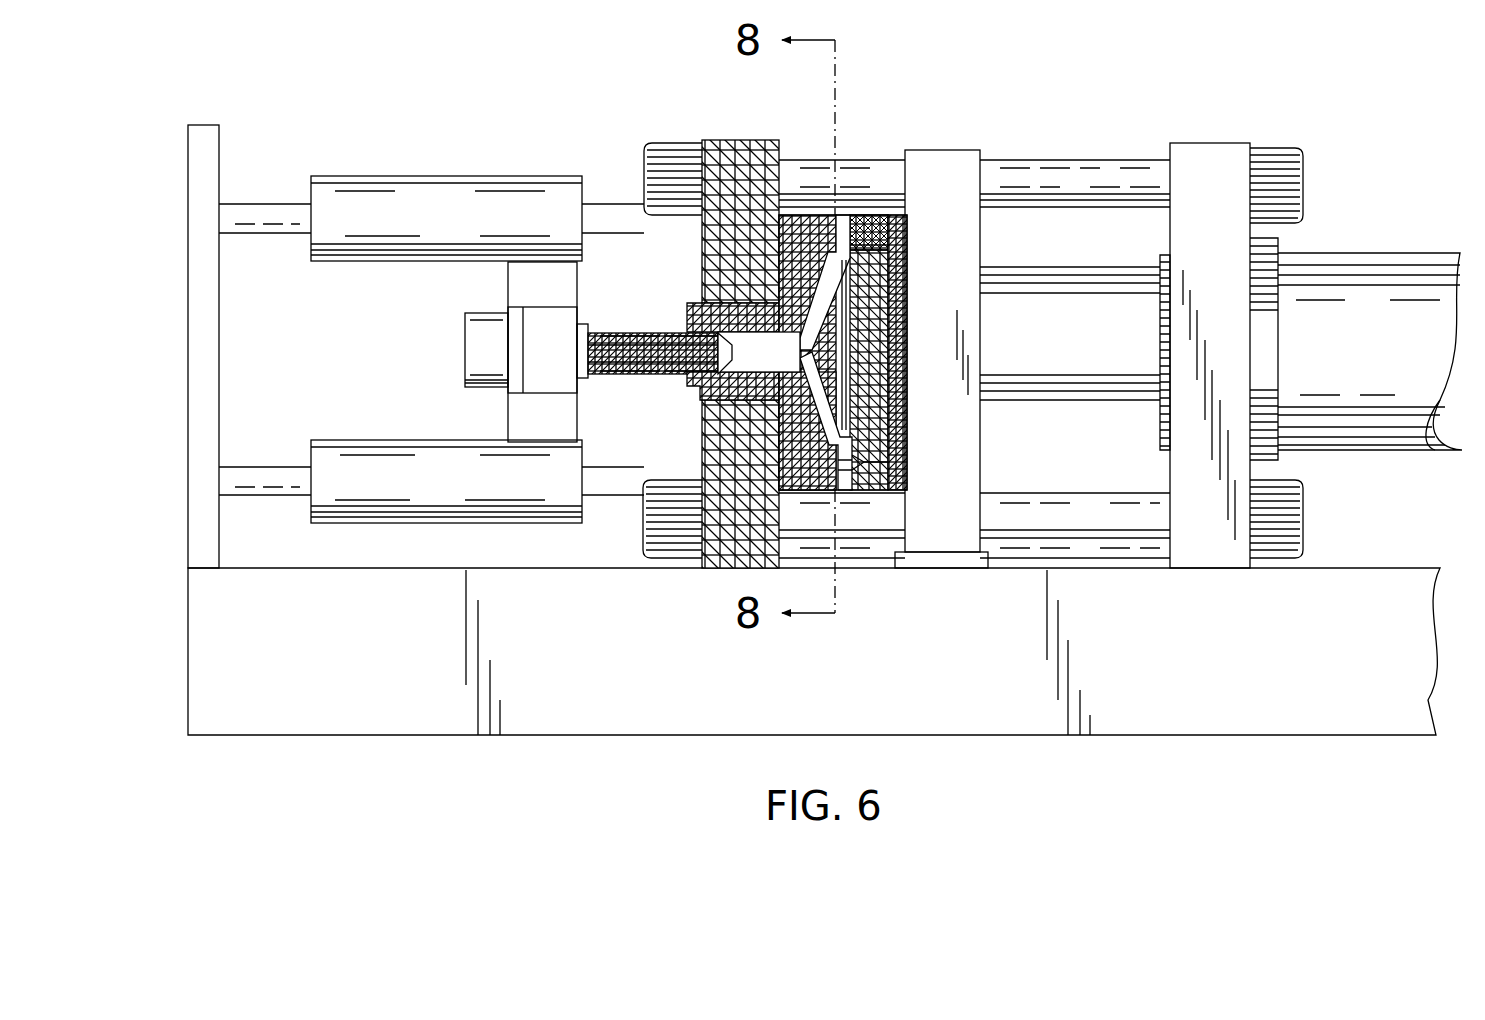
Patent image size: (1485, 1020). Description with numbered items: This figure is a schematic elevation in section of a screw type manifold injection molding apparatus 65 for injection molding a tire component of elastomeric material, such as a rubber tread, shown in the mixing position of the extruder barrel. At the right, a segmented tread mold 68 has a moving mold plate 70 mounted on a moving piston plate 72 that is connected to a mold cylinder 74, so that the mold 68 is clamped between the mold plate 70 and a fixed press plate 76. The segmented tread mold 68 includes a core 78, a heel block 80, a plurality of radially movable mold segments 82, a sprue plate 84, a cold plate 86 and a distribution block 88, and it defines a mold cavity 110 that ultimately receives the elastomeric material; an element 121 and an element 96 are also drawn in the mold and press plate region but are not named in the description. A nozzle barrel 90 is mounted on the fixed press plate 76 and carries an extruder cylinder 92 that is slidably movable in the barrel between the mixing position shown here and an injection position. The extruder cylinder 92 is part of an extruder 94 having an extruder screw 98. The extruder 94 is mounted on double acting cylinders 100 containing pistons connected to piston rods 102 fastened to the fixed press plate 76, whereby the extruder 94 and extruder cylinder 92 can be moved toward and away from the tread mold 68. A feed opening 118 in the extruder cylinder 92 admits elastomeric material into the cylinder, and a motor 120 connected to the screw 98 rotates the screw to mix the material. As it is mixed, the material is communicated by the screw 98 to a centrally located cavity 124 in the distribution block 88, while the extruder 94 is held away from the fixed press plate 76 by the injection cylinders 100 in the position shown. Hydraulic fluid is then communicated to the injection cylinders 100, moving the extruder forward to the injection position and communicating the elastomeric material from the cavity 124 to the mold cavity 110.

The manifold injection molding apparatus 65 is at (285, 160).
The double acting cylinders 100 is at (440, 195).
The piston rods 102 is at (606, 215).
The fixed press plate 76 is at (737, 140).
The cold plate 86 is at (800, 215).
The heel block 80 is at (866, 215).
The segmented tread mold 68 is at (870, 215).
The moving mold plate 70 is at (898, 215).
The mold cavity 110 is at (890, 248).
The core 78 is at (876, 320).
The ejector pin 121 is at (822, 408).
The radially movable mold segments 82 is at (878, 465).
The sprue plate 84 is at (840, 485).
The distribution block 88 is at (777, 425).
The cavity 124 is at (762, 355).
The nozzle barrel 90 is at (690, 398).
The extruder cylinder 92 is at (614, 375).
The extruder screw 98 is at (612, 340).
The extruder 94 is at (668, 335).
The bore in platen 96 is at (733, 328).
The feed opening 118 is at (598, 338).
The motor 120 is at (483, 350).
The moving piston plate 72 is at (962, 150).
The mold cylinder 74 is at (1372, 275).